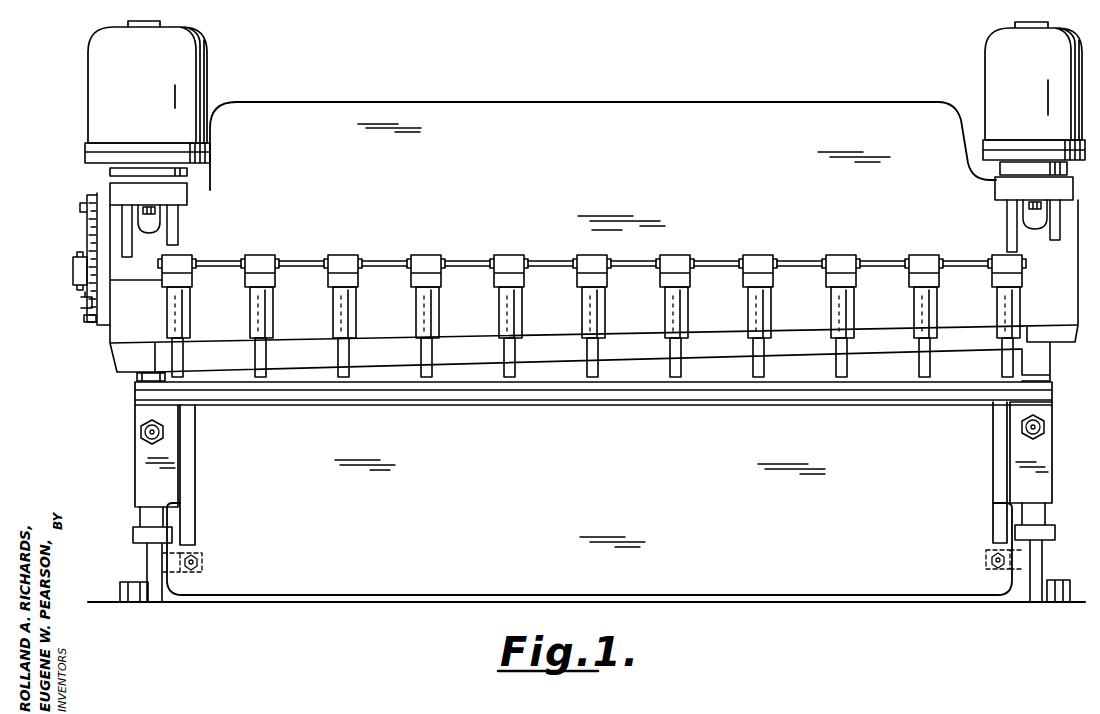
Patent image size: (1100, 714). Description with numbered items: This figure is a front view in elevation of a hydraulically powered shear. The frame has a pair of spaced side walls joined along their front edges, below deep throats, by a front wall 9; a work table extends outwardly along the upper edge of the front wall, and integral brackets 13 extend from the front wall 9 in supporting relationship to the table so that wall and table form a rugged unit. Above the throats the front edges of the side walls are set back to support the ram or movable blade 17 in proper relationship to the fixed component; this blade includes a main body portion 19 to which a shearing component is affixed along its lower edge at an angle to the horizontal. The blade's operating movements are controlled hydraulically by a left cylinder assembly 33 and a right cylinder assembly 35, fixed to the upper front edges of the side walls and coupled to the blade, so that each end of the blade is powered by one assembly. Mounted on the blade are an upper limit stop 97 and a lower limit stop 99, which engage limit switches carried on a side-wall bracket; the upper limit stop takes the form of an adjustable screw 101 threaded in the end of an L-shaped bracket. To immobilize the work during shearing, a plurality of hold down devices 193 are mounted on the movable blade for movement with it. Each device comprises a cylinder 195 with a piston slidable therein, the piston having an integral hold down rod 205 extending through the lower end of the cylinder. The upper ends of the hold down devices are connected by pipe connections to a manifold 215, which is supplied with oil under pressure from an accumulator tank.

The front wall 9 is at (366, 578).
The integral brackets 13 is at (992, 476).
The ram or movable blade 17 is at (605, 195).
The main body portion 19 is at (462, 122).
The left cylinder assembly 33 is at (158, 97).
The right cylinder assembly 35 is at (1037, 104).
The upper limit stop 97 is at (75, 322).
The lower limit stop 99 is at (81, 208).
The adjustable screw 101 is at (79, 298).
The hold down devices 193 is at (856, 253).
The cylinder 195 is at (833, 296).
The hold down rod 205 is at (1002, 362).
The manifold 215 is at (560, 263).